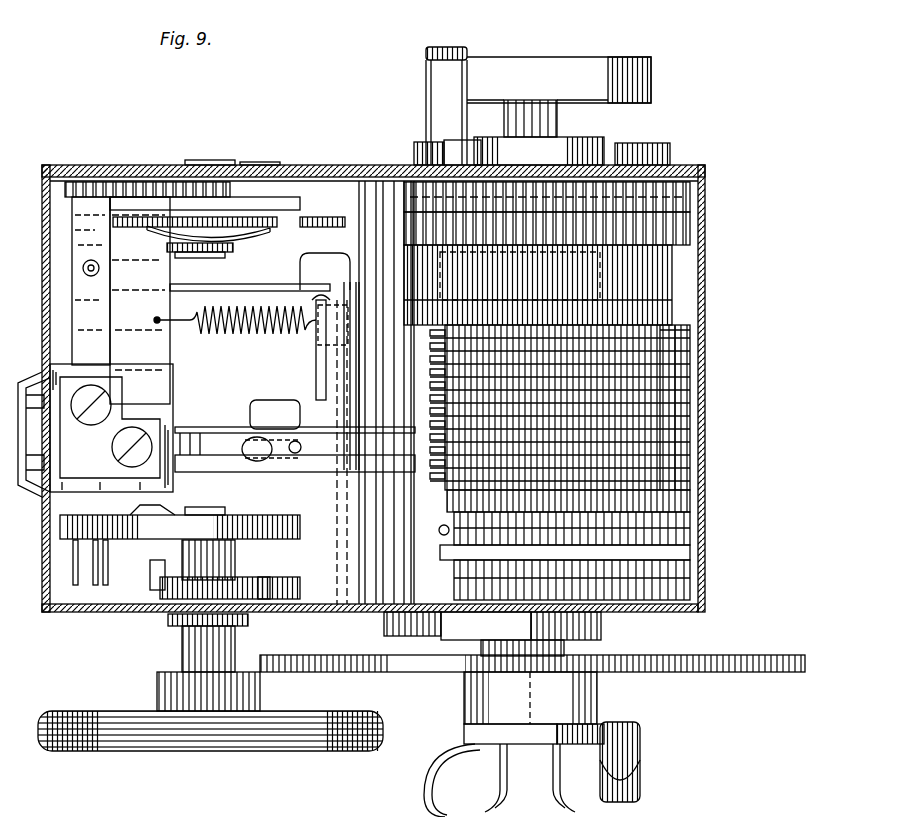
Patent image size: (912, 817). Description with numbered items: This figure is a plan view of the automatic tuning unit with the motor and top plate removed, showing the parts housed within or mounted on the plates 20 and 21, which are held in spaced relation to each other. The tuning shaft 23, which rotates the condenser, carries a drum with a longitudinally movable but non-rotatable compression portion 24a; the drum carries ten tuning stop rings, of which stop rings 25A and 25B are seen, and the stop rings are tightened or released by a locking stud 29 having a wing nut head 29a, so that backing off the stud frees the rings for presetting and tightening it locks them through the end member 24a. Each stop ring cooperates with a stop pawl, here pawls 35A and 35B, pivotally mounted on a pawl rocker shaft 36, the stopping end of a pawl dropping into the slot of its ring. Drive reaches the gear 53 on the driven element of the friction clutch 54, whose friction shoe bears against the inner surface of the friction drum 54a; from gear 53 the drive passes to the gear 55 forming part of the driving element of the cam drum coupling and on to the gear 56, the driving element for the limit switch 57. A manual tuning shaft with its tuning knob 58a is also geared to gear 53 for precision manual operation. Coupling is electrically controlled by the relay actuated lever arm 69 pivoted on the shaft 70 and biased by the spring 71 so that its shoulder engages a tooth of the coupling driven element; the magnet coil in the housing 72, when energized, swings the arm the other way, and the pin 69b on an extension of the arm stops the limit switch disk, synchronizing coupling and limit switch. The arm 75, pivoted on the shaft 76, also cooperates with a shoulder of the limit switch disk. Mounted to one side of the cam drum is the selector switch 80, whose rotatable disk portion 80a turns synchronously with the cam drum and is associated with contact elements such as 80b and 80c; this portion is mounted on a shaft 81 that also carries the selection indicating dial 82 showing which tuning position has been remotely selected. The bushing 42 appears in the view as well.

The plate 20 is at (340, 172).
The plate 21 is at (686, 612).
The tuning shaft 23 is at (541, 123).
The compression portion 24a is at (590, 535).
The tuning stop ring 25A is at (623, 480).
The tuning stop ring 25B is at (597, 407).
The locking stud 29 is at (504, 735).
The wing nut head 29a is at (456, 783).
The stop pawl 35A is at (683, 485).
The stop pawl 35B is at (678, 469).
The pawl rocker shaft 36 is at (673, 515).
The bushing 42 is at (534, 533).
The gear 53 is at (675, 227).
The friction clutch 54 is at (631, 200).
The friction drum 54a is at (638, 290).
The gear 55 is at (404, 190).
The gear 56 is at (144, 190).
The limit switch 57 is at (322, 213).
The tuning knob 58a is at (626, 746).
The lever arm 69 is at (330, 262).
The pin 69b is at (297, 272).
The shaft 70 is at (384, 372).
The spring 71 is at (246, 338).
The magnet coil housing 72 is at (188, 483).
The arm 75 is at (121, 210).
The shaft 76 is at (272, 236).
The selector switch 80 is at (160, 575).
The rotatable disk portion 80a is at (247, 529).
The contact element 80b is at (75, 571).
The contact element 80c is at (100, 571).
The shaft 81 is at (188, 645).
The selection indicating dial 82 is at (95, 727).